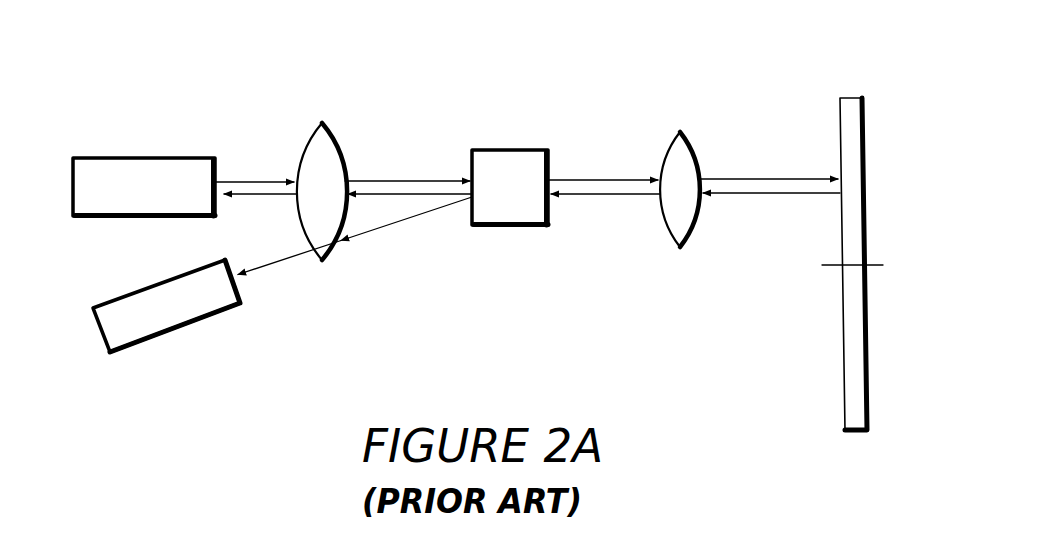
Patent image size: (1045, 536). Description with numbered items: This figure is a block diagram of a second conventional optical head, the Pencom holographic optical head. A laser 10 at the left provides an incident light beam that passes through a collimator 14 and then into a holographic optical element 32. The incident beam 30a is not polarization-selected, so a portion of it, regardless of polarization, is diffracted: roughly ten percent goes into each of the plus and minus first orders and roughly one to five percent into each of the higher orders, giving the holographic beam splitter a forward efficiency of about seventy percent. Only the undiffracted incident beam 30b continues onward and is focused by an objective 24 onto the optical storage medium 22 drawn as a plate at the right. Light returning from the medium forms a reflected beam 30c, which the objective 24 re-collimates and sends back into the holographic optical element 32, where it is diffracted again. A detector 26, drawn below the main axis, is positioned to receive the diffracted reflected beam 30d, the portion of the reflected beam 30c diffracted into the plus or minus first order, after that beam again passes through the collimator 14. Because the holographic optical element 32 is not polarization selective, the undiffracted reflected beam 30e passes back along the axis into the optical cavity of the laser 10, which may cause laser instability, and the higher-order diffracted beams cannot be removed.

The laser 10 is at (137, 158).
The collimator 14 is at (322, 124).
The holographic optical element 32 is at (517, 150).
The objective 24 is at (681, 132).
The optical storage medium 22 is at (853, 143).
The detector 26 is at (215, 312).
The incident beam 30a is at (255, 180).
The undiffracted incident beam 30b is at (590, 180).
The reflected beam 30c is at (777, 196).
The diffracted reflected beam 30d is at (390, 195).
The undiffracted reflected beam 30e is at (258, 198).